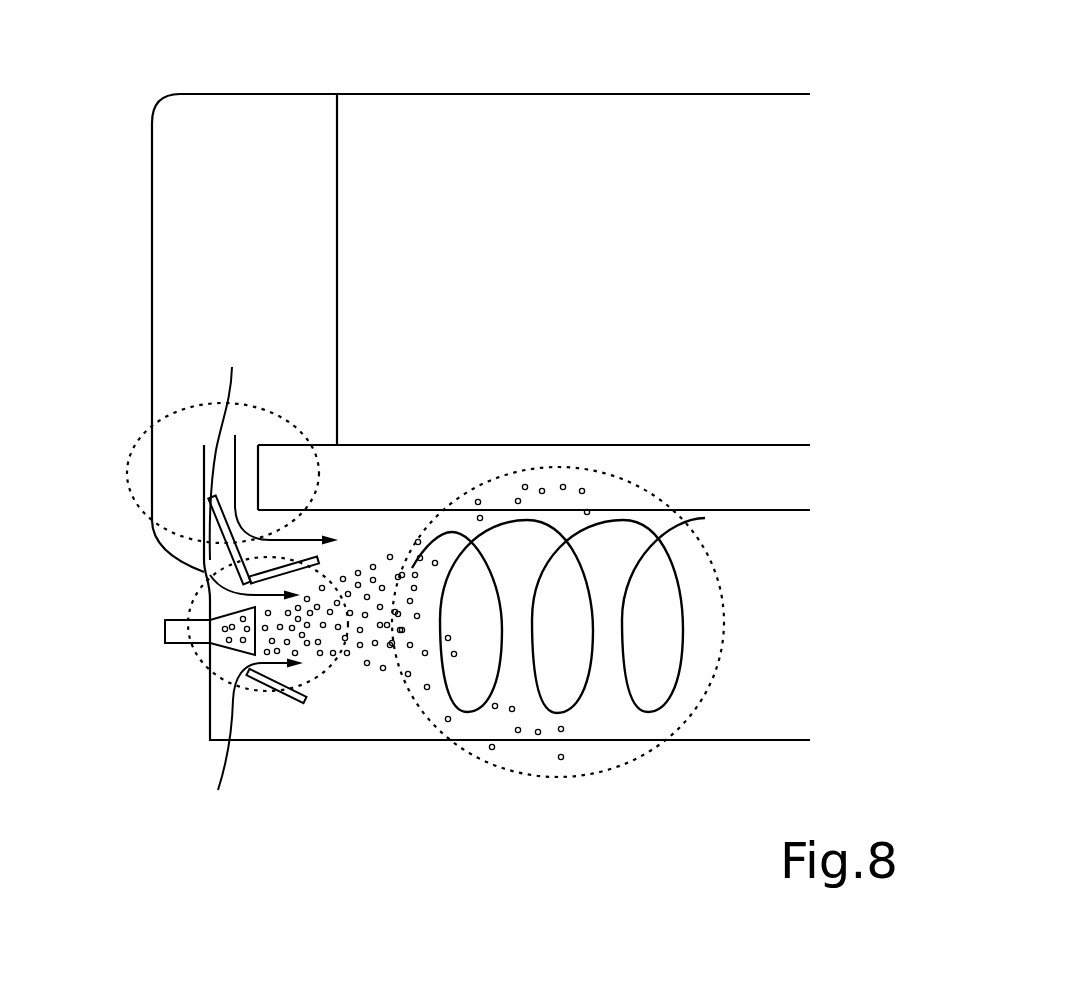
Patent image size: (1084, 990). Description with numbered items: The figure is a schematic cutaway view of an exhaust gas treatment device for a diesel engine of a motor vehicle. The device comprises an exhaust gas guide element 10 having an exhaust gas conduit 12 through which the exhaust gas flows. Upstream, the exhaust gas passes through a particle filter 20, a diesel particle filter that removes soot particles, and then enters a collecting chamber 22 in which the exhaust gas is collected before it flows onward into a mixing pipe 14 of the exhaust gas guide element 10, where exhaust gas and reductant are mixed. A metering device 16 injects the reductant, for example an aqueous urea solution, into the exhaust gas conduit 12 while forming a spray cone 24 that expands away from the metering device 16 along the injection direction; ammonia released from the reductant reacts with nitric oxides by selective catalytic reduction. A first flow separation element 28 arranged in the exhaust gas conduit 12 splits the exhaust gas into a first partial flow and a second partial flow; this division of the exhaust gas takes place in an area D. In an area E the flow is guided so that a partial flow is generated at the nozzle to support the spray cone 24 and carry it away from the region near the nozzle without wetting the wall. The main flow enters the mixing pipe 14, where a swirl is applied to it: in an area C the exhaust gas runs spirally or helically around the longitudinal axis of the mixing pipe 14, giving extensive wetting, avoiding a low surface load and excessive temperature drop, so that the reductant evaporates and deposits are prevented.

The exhaust gas guide element 10 is at (276, 80).
The particle filter 20 is at (618, 80).
The collecting chamber 22 is at (260, 246).
The exhaust gas conduit 12 is at (325, 514).
The first flow separation element 28 is at (230, 445).
The mixing pipe 14 is at (343, 742).
The metering device 16 is at (165, 630).
The spray cone 24 is at (235, 648).
The area D is at (126, 470).
The area E is at (190, 606).
The area C is at (545, 779).